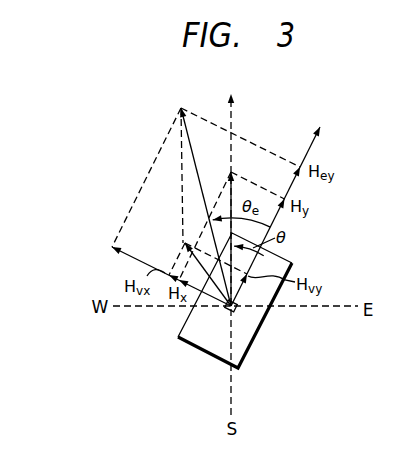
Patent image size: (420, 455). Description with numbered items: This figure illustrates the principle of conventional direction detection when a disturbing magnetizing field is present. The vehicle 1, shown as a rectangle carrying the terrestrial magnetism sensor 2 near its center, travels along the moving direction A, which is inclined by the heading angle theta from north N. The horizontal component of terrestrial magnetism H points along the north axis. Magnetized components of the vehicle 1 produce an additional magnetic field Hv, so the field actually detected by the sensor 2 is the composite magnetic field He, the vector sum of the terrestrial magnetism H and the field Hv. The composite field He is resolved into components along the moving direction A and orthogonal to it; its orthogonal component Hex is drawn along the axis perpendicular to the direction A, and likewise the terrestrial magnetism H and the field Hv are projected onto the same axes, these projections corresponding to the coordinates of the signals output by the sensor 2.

The vehicle 1 is at (197, 350).
The terrestrial magnetism sensor 2 is at (236, 312).
The north axis N is at (232, 242).
The moving direction A is at (281, 206).
The composite magnetic field He is at (200, 193).
The terrestrial magnetism H is at (235, 227).
The magnetic field produced by magnetized components Hv is at (191, 266).
The x component of composite magnetic field Hex is at (159, 276).